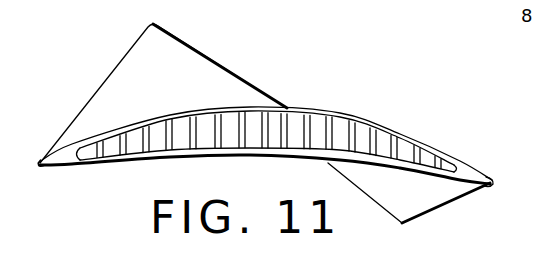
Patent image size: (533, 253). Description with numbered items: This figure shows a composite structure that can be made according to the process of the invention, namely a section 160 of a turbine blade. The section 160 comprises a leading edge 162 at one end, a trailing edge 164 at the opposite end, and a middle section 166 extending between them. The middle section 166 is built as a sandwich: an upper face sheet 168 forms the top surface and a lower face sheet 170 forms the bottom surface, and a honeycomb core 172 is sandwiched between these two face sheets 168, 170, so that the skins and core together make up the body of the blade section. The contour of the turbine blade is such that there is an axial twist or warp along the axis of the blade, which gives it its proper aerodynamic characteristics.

The section of a turbine blade 160 is at (334, 81).
The leading edge 162 is at (476, 177).
The trailing edge 164 is at (62, 159).
The middle section 166 is at (243, 84).
The upper face sheet 168 is at (341, 113).
The lower face sheet 170 is at (335, 162).
The honeycomb core 172 is at (378, 141).